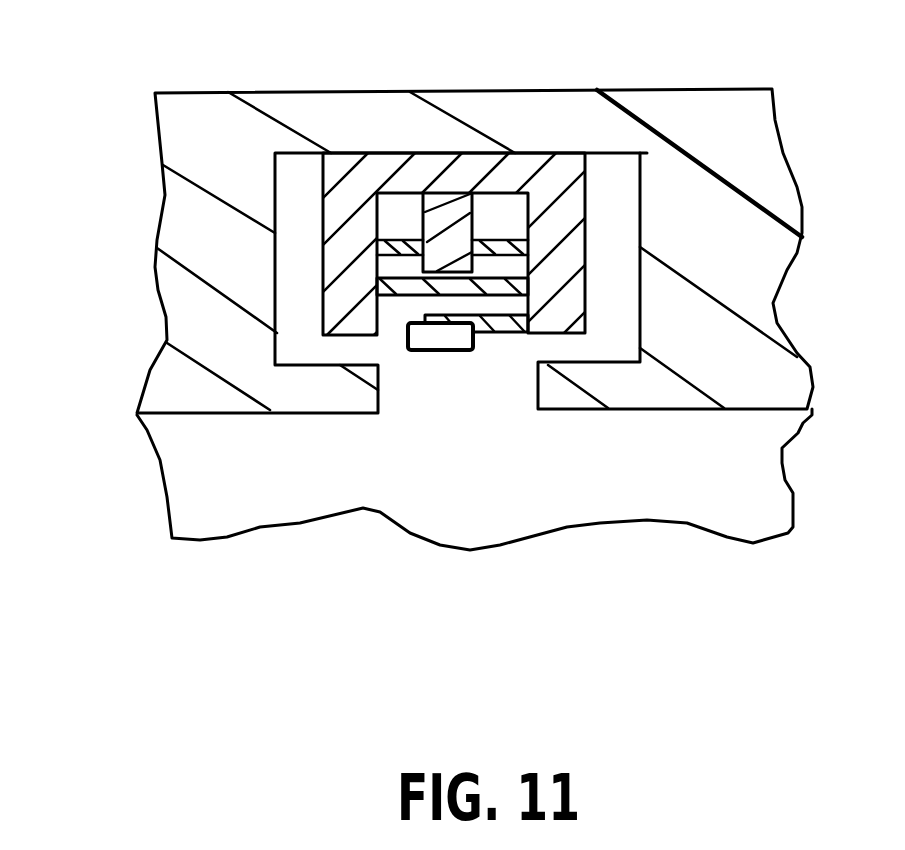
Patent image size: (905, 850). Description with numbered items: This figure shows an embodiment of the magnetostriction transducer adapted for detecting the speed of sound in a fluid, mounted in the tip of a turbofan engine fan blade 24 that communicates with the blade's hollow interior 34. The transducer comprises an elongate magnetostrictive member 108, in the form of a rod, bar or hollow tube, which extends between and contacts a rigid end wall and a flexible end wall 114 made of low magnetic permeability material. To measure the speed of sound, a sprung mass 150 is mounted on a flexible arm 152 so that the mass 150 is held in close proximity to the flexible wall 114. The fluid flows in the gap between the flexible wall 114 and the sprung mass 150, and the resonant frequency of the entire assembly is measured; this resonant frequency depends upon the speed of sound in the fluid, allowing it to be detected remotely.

The fan blade 24 is at (753, 137).
The hollow interior 34 is at (742, 477).
The magnetostrictive member 108 is at (455, 242).
The flexible end wall 114 is at (407, 295).
The sprung mass 150 is at (420, 350).
The flexible arm 152 is at (510, 335).